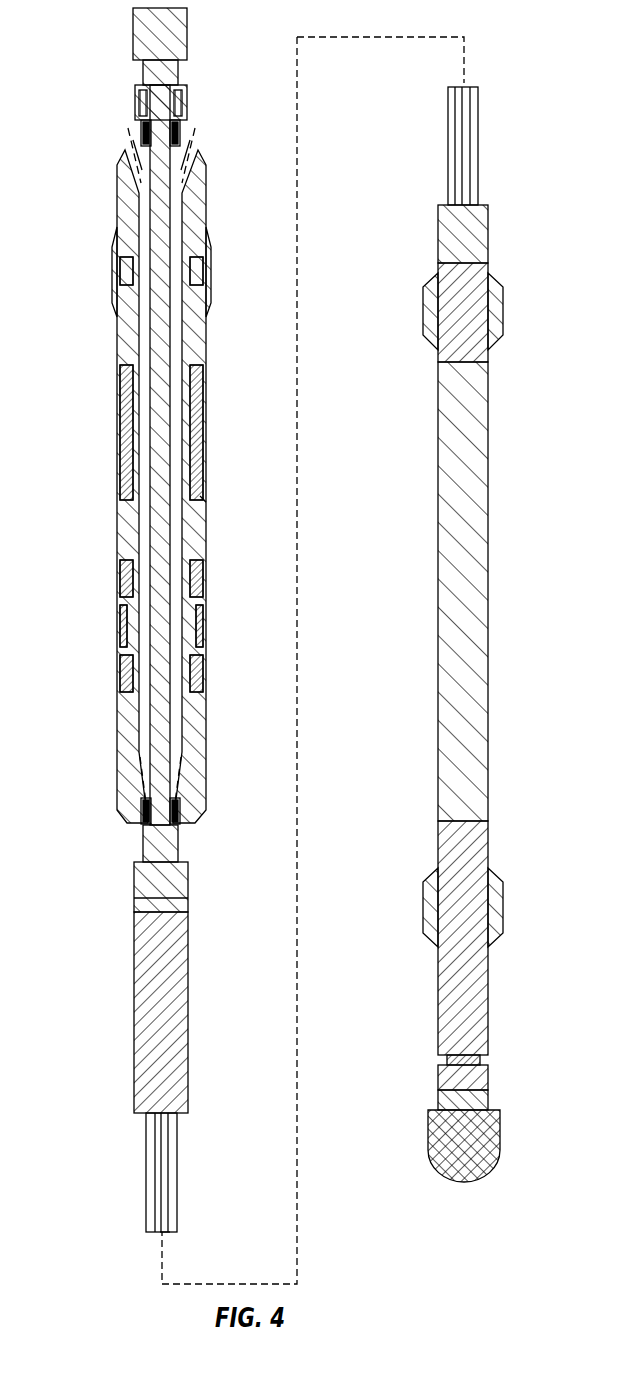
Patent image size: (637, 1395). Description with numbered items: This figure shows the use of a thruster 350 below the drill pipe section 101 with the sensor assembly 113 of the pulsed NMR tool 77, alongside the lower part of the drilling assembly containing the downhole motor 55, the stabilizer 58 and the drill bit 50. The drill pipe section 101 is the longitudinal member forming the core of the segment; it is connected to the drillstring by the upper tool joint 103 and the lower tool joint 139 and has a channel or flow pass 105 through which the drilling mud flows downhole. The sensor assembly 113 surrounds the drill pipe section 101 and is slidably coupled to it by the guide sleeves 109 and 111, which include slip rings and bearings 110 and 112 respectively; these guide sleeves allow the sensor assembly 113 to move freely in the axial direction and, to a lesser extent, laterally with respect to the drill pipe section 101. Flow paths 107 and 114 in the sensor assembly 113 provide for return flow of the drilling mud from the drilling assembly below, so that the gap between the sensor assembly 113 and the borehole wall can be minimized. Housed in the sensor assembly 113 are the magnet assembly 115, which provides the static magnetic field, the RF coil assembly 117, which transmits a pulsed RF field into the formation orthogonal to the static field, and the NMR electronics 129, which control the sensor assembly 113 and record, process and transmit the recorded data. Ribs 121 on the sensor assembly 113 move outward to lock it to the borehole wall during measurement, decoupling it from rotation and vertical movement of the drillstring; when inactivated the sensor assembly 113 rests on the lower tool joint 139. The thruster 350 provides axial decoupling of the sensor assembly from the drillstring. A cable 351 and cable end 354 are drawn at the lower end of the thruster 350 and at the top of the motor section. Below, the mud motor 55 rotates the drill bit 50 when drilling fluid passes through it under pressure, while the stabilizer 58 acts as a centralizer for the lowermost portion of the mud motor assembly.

The upper tool joint 103 is at (152, 36).
The drill pipe section 101 is at (143, 75).
The guide sleeve 111 is at (185, 103).
The slip rings and bearings 112 is at (181, 137).
The channel or flow pass 105 is at (158, 124).
The flow path 114 is at (176, 658).
The flow path 107 is at (143, 553).
The sensor assembly 113 is at (200, 337).
The ribs 121 is at (116, 280).
The NMR electronics 129 is at (125, 440).
The pulsed NMR tool 77 is at (210, 498).
The magnet assembly 115 is at (200, 578).
The RF coil assembly 117 is at (122, 668).
The slip rings and bearings 110 is at (180, 803).
The guide sleeve 109 is at (183, 826).
The lower tool joint 139 is at (137, 890).
The thruster 350 is at (143, 1033).
The cable 351 is at (158, 1170).
The cable end 354 is at (170, 1238).
The downhole motor 55 is at (452, 615).
The stabilizer 58 is at (423, 922).
The drill bit 50 is at (448, 1168).